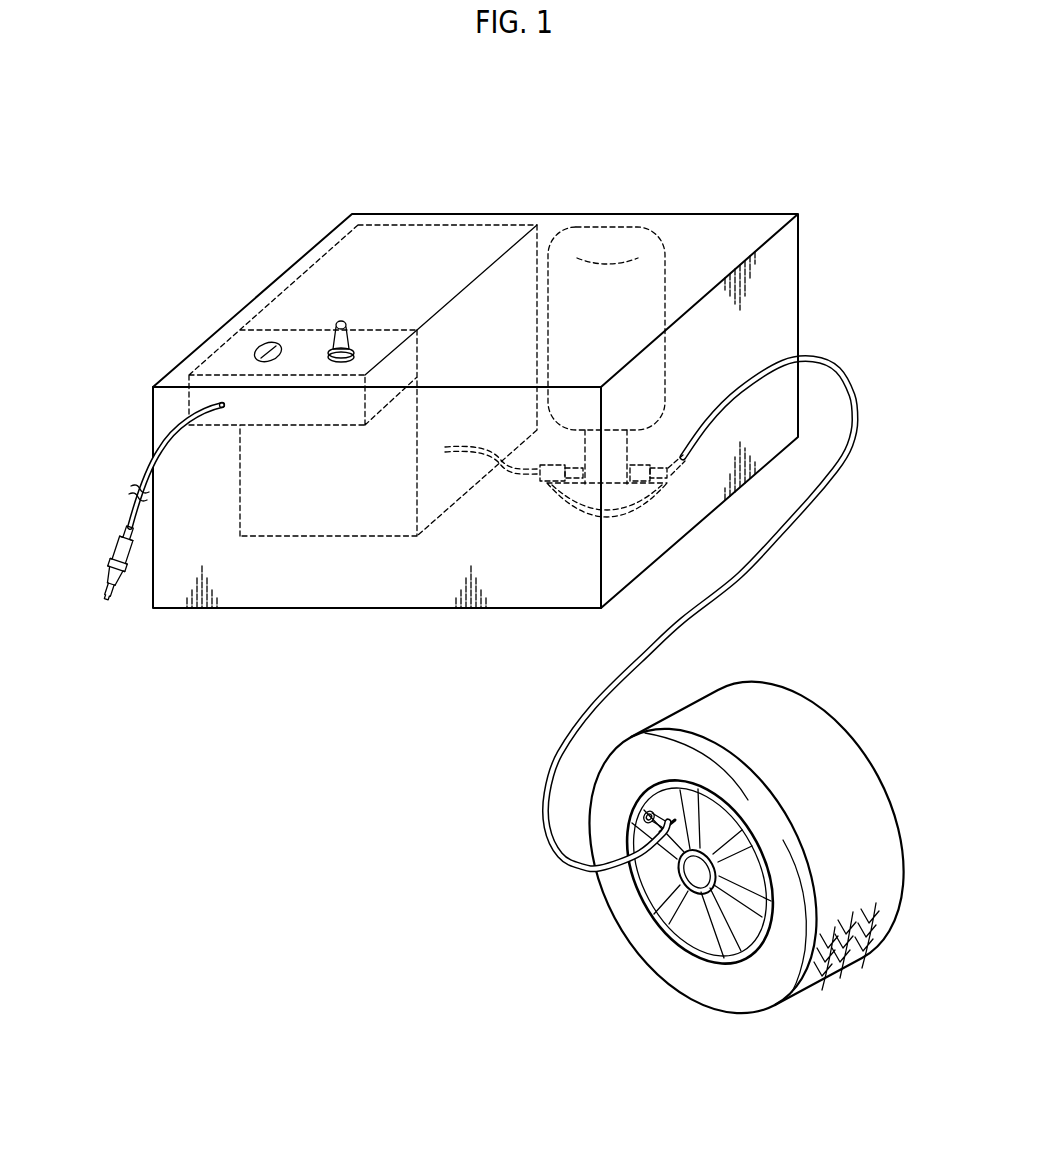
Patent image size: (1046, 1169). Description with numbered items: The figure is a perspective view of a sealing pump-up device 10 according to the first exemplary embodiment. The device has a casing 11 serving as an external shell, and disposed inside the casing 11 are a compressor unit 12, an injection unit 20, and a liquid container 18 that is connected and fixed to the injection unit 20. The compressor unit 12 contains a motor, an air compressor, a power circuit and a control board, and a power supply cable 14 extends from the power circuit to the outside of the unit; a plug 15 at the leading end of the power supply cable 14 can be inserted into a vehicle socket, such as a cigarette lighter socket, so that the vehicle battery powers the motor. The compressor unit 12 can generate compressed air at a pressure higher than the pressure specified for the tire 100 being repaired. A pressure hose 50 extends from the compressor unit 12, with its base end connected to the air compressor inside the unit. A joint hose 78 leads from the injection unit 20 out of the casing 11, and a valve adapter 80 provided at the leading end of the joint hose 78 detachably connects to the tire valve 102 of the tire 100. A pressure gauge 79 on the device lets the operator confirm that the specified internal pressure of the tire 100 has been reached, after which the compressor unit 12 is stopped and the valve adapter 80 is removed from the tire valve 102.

The sealing pump-up device 10 is at (807, 157).
The casing 11 is at (798, 283).
The compressor unit 12 is at (460, 227).
The power supply cable 14 is at (176, 432).
The plug 15 is at (108, 570).
The liquid container 18 is at (665, 260).
The injection unit 20 is at (672, 503).
The pressure hose 50 is at (505, 470).
The joint hose 78 is at (742, 580).
The pressure gauge 79 is at (282, 345).
The valve adapter 80 is at (666, 817).
The tire 100 is at (850, 770).
The tire valve 102 is at (650, 807).